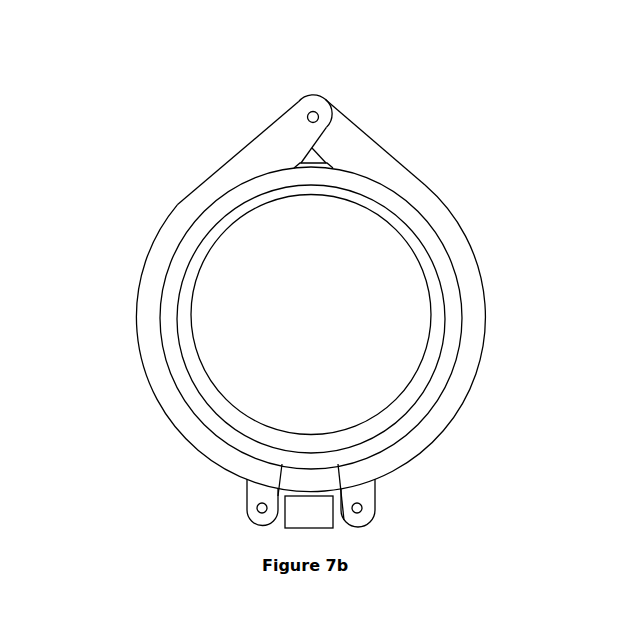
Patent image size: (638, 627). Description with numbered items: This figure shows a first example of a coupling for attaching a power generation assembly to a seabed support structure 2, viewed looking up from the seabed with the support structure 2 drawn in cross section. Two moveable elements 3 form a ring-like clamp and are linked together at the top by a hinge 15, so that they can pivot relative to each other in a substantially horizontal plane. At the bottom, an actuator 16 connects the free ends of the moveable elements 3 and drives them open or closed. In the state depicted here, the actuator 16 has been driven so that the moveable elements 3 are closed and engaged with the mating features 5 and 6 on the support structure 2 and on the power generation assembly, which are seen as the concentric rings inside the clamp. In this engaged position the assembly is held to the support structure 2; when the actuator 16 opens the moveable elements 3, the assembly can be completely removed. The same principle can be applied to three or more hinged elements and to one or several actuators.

The support structure 2 is at (185, 347).
The moveable elements 3 is at (212, 190).
The mating feature 5 is at (170, 282).
The mating feature 6 is at (311, 316).
The hinge 15 is at (310, 116).
The actuator 16 is at (303, 514).